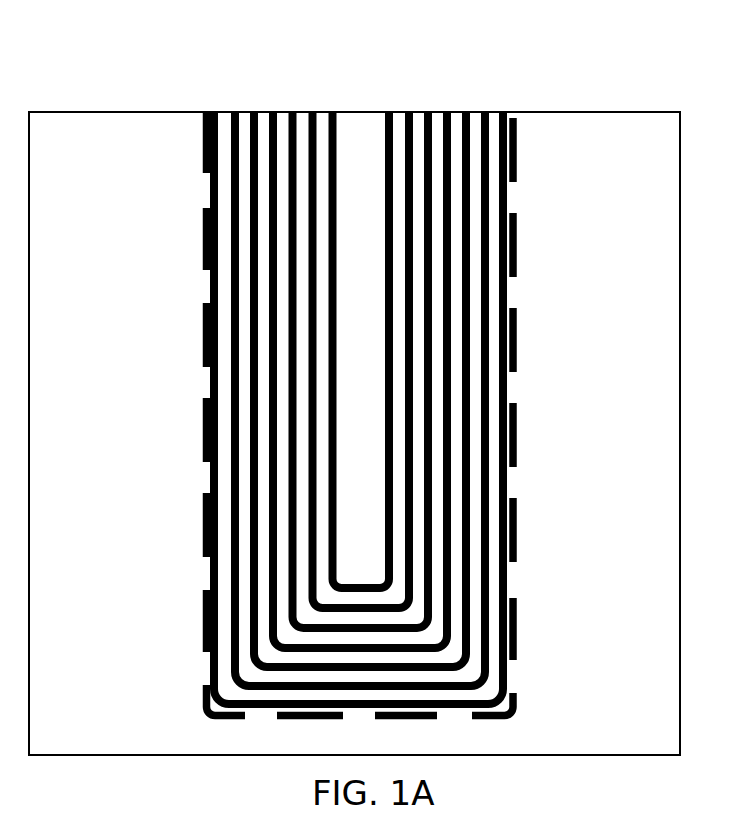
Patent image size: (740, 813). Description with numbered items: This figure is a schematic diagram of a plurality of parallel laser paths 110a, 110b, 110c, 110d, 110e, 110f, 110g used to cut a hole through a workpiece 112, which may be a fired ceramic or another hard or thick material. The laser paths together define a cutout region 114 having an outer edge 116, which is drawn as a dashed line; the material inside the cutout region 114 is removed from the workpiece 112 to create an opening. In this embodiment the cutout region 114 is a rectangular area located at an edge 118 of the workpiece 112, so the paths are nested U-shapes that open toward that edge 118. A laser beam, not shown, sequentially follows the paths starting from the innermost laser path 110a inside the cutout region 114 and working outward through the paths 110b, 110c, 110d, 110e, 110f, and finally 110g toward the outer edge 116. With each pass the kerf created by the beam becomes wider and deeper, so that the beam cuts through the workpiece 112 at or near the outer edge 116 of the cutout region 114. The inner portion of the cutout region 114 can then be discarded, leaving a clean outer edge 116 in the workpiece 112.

The innermost laser path 110a is at (390, 111).
The laser path 110b is at (410, 111).
The laser path 110c is at (425, 111).
The laser path 110d is at (445, 111).
The laser path 110e is at (462, 111).
The laser path 110f is at (485, 111).
The laser path 110g is at (499, 111).
The workpiece 112 is at (122, 280).
The cutout region 114 is at (362, 326).
The outer edge 116 is at (517, 152).
The edge of the workpiece 118 is at (142, 111).